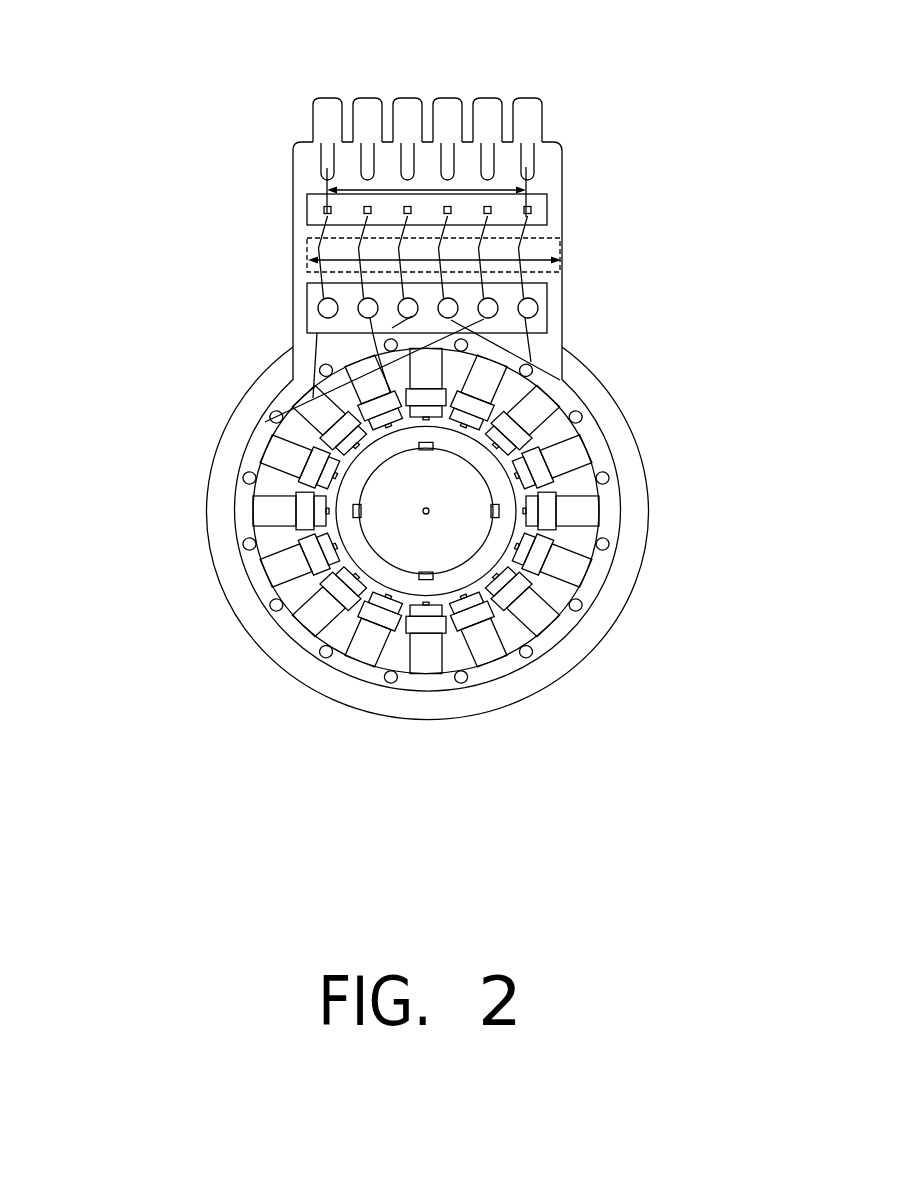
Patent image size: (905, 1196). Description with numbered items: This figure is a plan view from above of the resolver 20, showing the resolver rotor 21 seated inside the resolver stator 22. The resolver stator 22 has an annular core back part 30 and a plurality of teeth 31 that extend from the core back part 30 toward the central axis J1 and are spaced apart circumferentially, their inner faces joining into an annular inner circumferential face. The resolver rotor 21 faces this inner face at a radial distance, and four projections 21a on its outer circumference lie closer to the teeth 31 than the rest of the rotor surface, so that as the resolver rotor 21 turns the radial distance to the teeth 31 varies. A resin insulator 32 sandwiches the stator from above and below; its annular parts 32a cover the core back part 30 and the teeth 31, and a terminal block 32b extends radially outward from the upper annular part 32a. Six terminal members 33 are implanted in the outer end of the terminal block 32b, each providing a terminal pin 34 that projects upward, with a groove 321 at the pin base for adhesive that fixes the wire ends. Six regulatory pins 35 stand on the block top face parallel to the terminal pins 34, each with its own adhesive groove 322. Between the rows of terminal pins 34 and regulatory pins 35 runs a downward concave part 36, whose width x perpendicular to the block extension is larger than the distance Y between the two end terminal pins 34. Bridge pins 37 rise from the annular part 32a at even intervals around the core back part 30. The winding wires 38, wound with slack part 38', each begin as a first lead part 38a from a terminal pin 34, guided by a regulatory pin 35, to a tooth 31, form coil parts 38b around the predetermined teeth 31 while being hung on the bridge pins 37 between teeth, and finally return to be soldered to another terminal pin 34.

The resolver 20 is at (550, 728).
The resolver rotor 21 is at (272, 545).
The projection 21a is at (413, 424).
The central axis J1 is at (429, 514).
The resolver stator 22 is at (332, 700).
The core back part 30 is at (217, 528).
The tooth 31 is at (565, 458).
The insulator 32 is at (288, 382).
The annular part 32a is at (270, 424).
The terminal block 32b is at (302, 170).
The groove 321 is at (312, 218).
The groove 322 is at (316, 278).
The terminal member 33 is at (540, 115).
The terminal pin 34 is at (548, 207).
The regulatory pin 35 is at (548, 318).
The concave part 36 is at (515, 271).
The bridge pin 37 is at (247, 472).
The winding wire 38 is at (356, 319).
The first lead part 38a is at (313, 243).
The coil part 38b is at (474, 233).
The slack part 38' is at (438, 188).
The width of the concave part x is at (500, 262).
The distance between the terminal pins on both ends Y is at (470, 192).